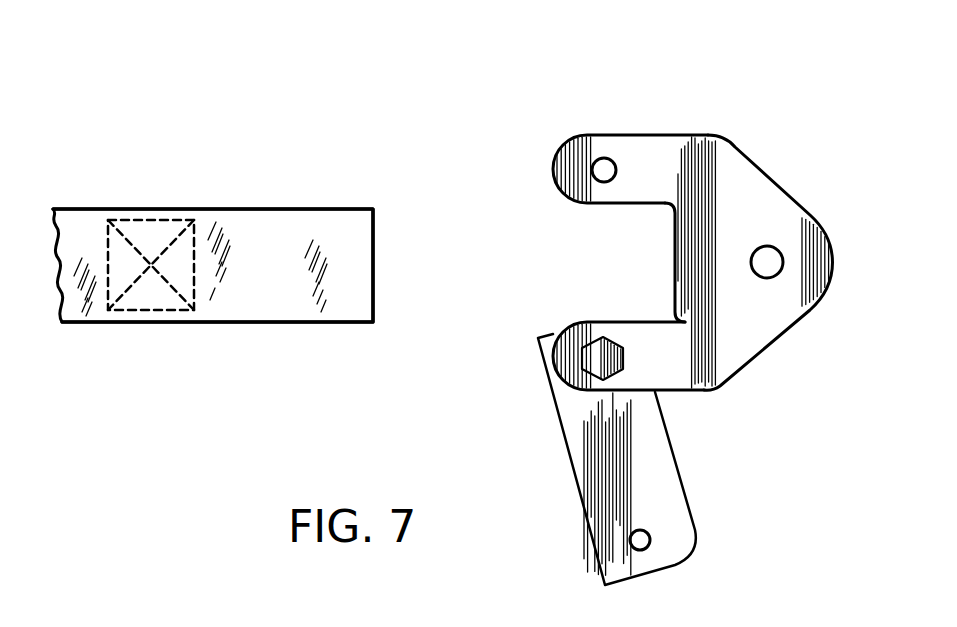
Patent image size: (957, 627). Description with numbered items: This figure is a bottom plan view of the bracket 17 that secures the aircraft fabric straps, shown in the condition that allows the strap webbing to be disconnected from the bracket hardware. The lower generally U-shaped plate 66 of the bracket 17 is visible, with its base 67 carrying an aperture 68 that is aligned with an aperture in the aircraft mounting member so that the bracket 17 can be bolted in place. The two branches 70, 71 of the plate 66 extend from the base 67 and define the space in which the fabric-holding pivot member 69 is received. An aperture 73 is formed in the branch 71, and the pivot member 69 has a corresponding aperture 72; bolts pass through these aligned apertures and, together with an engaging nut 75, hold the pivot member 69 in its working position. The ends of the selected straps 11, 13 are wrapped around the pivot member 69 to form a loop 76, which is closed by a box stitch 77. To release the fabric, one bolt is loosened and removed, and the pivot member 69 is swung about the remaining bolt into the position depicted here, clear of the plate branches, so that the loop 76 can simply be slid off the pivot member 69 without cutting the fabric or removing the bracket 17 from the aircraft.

The strap 11 is at (225, 302).
The strap 13 is at (192, 370).
The bracket 17 is at (778, 136).
The lower generally U-shaped plate 66 is at (707, 116).
The base 67 is at (778, 223).
The aperture 68 is at (772, 268).
The fabric-holding pivot member 69 is at (635, 447).
The branch 70 is at (655, 348).
The branch 71 is at (638, 172).
The aperture 72 is at (643, 538).
The aperture 73 is at (603, 167).
The nut 75 is at (600, 353).
The loop 76 is at (327, 263).
The box stitch 77 is at (128, 263).